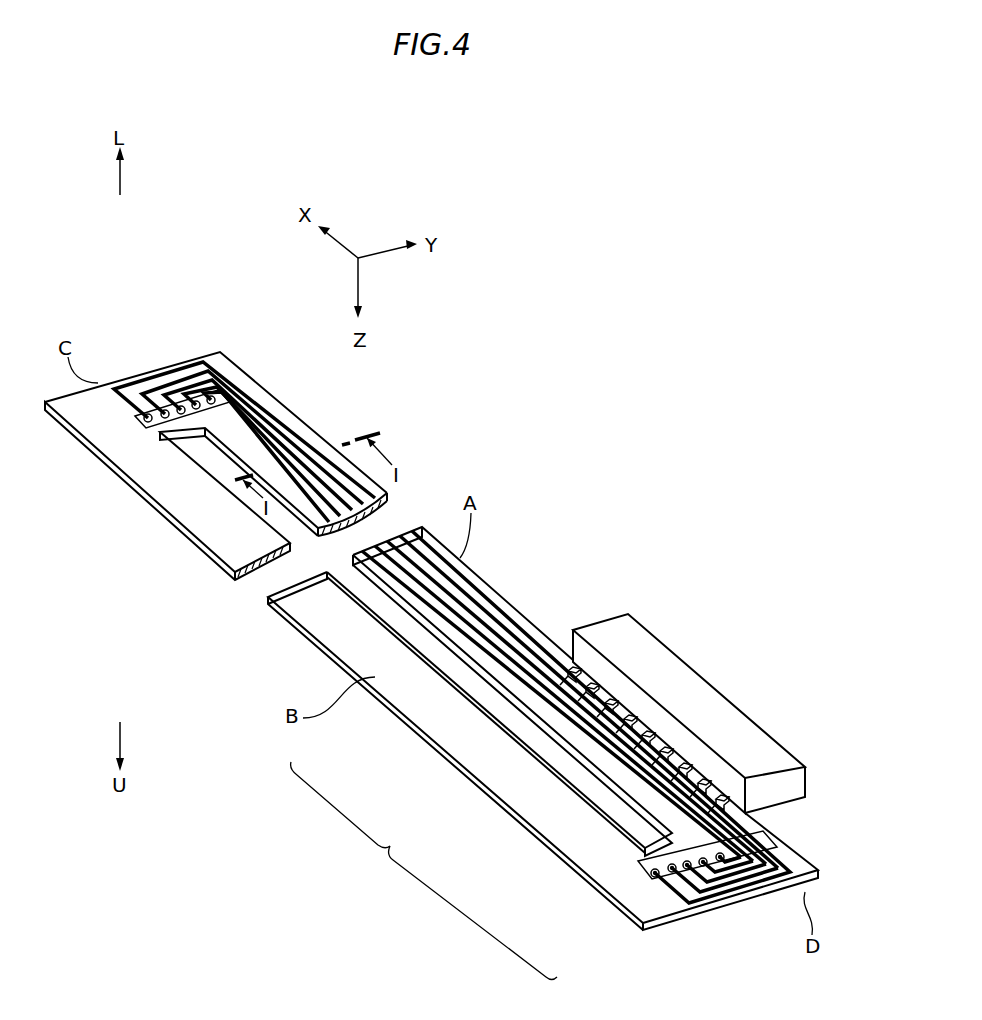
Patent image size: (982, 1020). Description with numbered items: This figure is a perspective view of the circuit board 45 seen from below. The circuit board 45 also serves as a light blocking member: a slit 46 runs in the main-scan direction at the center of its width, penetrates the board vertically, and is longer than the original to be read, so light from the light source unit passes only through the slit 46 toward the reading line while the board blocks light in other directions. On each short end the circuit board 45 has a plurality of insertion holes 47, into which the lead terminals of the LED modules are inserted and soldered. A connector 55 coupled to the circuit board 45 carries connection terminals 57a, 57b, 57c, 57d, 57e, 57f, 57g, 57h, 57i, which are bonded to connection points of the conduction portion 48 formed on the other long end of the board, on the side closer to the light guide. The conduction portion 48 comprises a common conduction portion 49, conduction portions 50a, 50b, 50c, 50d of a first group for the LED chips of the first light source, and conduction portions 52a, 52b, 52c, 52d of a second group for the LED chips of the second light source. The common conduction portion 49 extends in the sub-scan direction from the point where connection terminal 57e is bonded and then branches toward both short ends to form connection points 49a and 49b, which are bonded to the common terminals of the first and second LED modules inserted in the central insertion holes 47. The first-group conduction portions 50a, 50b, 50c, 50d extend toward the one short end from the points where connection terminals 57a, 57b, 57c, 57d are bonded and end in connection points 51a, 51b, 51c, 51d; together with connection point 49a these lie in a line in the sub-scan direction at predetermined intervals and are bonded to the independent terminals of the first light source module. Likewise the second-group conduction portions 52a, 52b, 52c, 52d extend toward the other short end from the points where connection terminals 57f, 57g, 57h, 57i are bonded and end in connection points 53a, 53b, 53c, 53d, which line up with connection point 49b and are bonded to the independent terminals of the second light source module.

The circuit board 45 is at (200, 627).
The slit 46 is at (385, 607).
The insertion holes 47 is at (211, 404).
The conduction portion 48 is at (424, 871).
The common conduction portion 49 is at (625, 723).
The connection point 49a is at (147, 413).
The connection point 49b is at (655, 877).
The conduction portion of the first group 50a is at (505, 666).
The conduction portion of the first group 50b is at (535, 679).
The conduction portion of the first group 50c is at (565, 693).
The conduction portion of the first group 50d is at (595, 707).
The connection point 51a is at (162, 410).
The connection point 51b is at (180, 404).
The connection point 51c is at (193, 398).
The connection point 51d is at (212, 391).
The conduction portion of the second group 52a is at (715, 836).
The conduction portion of the second group 52b is at (700, 817).
The conduction portion of the second group 52c is at (680, 791).
The conduction portion of the second group 52d is at (660, 764).
The connection point 53a is at (672, 872).
The connection point 53b is at (687, 869).
The connection point 53c is at (703, 866).
The connection point 53d is at (721, 861).
The connector 55 is at (788, 763).
The connection terminal 57a is at (575, 666).
The connection terminal 57b is at (593, 683).
The connection terminal 57c is at (612, 700).
The connection terminal 57d is at (630, 716).
The connection terminal 57e is at (648, 732).
The connection terminal 57f is at (723, 796).
The connection terminal 57g is at (703, 778).
The connection terminal 57h is at (685, 763).
The connection terminal 57i is at (667, 748).